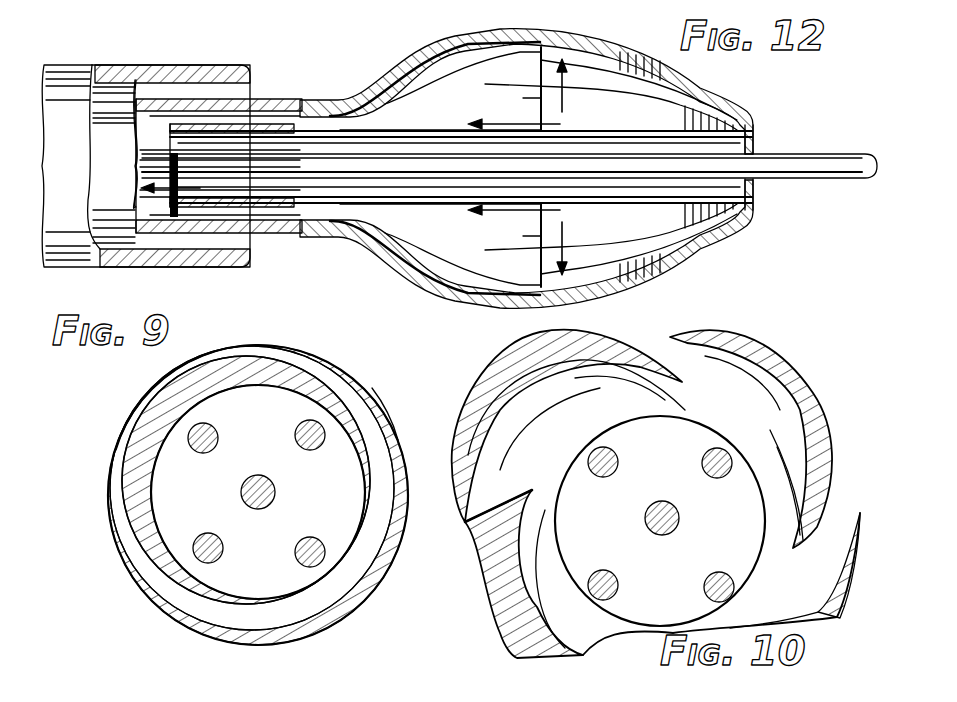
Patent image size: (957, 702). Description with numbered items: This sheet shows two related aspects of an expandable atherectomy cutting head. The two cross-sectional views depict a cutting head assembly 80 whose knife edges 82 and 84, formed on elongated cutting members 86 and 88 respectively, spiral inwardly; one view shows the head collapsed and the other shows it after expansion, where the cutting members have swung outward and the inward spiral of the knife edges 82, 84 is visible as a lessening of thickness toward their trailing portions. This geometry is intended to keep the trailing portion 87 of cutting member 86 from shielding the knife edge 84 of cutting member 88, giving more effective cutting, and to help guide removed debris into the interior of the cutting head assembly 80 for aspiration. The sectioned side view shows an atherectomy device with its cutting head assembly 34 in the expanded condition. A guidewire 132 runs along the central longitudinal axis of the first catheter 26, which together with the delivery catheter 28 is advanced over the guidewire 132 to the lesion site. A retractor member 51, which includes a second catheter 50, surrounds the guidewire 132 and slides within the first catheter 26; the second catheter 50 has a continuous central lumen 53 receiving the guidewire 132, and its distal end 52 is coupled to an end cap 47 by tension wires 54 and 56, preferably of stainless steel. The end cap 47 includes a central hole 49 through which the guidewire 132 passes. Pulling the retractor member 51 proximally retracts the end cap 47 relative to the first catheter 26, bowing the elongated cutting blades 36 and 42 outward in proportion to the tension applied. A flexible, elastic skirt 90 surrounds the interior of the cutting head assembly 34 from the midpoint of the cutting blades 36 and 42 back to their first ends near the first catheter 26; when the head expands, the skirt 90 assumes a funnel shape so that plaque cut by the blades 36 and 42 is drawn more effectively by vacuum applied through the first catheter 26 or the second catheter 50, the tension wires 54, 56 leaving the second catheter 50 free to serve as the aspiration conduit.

In FIG. 12, the delivery catheter 28 is at (78, 40).
In FIG. 12, the first catheter 26 is at (134, 83).
In FIG. 12, the second catheter 50 is at (173, 99).
In FIG. 12, the distal end 52 is at (300, 100).
In FIG. 12, the central lumen 53 is at (300, 233).
In FIG. 12, the elongated cutting blade 36 is at (463, 45).
In FIG. 12, the cutting head assembly 34 is at (572, 22).
In FIG. 12, the skirt 90 is at (450, 62).
In FIG. 12, the tension wire 54 is at (438, 128).
In FIG. 9, the tension wire 54 is at (216, 428).
In FIG. 10, the tension wire 54 is at (618, 462).
In FIG. 12, the tension wire 56 is at (430, 205).
In FIG. 9, the tension wire 56 is at (222, 545).
In FIG. 10, the tension wire 56 is at (616, 580).
In FIG. 12, the end cap 47 is at (754, 116).
In FIG. 12, the central hole 49 is at (754, 181).
In FIG. 12, the guidewire 132 is at (850, 138).
In FIG. 9, the guidewire 132 is at (276, 492).
In FIG. 10, the guidewire 132 is at (680, 518).
In FIG. 12, the retractor member 51 is at (412, 264).
In FIG. 12, the elongated cutting blade 42 is at (448, 294).
In FIG. 9, the cutting head assembly 80 is at (310, 349).
In FIG. 10, the cutting head assembly 80 is at (770, 330).
In FIG. 9, the knife edge 82 is at (114, 484).
In FIG. 10, the knife edge 82 is at (467, 524).
In FIG. 9, the knife edge 84 is at (207, 358).
In FIG. 10, the knife edge 84 is at (718, 362).
In FIG. 9, the elongated cutting member 86 is at (121, 440).
In FIG. 10, the elongated cutting member 86 is at (468, 400).
In FIG. 9, the trailing portion 87 is at (300, 390).
In FIG. 10, the trailing portion 87 is at (660, 322).
In FIG. 9, the elongated cutting member 88 is at (368, 396).
In FIG. 10, the elongated cutting member 88 is at (813, 400).